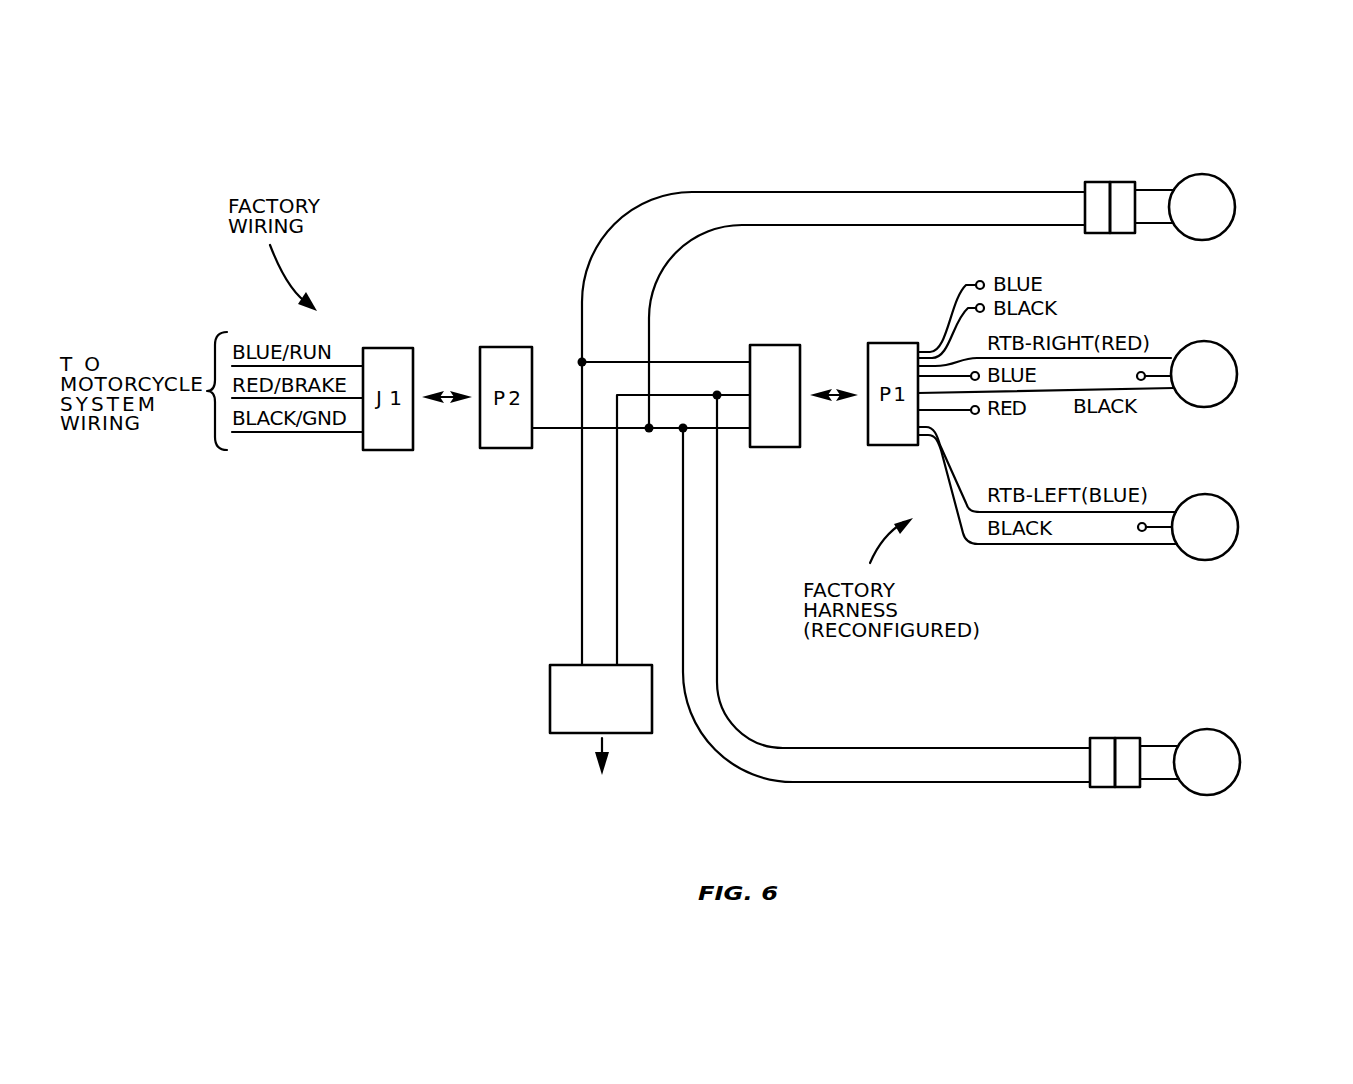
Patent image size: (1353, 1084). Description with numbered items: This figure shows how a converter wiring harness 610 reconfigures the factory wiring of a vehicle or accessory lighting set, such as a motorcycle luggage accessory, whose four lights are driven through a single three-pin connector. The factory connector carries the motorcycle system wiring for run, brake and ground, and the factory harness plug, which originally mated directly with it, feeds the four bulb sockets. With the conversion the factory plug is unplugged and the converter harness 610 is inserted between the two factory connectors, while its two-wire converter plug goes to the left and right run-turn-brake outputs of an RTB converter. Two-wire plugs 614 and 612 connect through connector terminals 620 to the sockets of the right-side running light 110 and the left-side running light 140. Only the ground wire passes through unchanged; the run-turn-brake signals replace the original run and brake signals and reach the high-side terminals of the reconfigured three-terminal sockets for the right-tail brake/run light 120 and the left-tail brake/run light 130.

The converter wiring harness 610 is at (522, 208).
The two-wire plug 614 is at (1097, 182).
The connector terminals 620 is at (1122, 182).
The two-wire plug 612 is at (1100, 787).
The right-side running light 110 is at (1218, 233).
The right-tail brake/run light 120 is at (1222, 403).
The left-tail brake/run light 130 is at (1220, 553).
The left-side running light 140 is at (1225, 788).